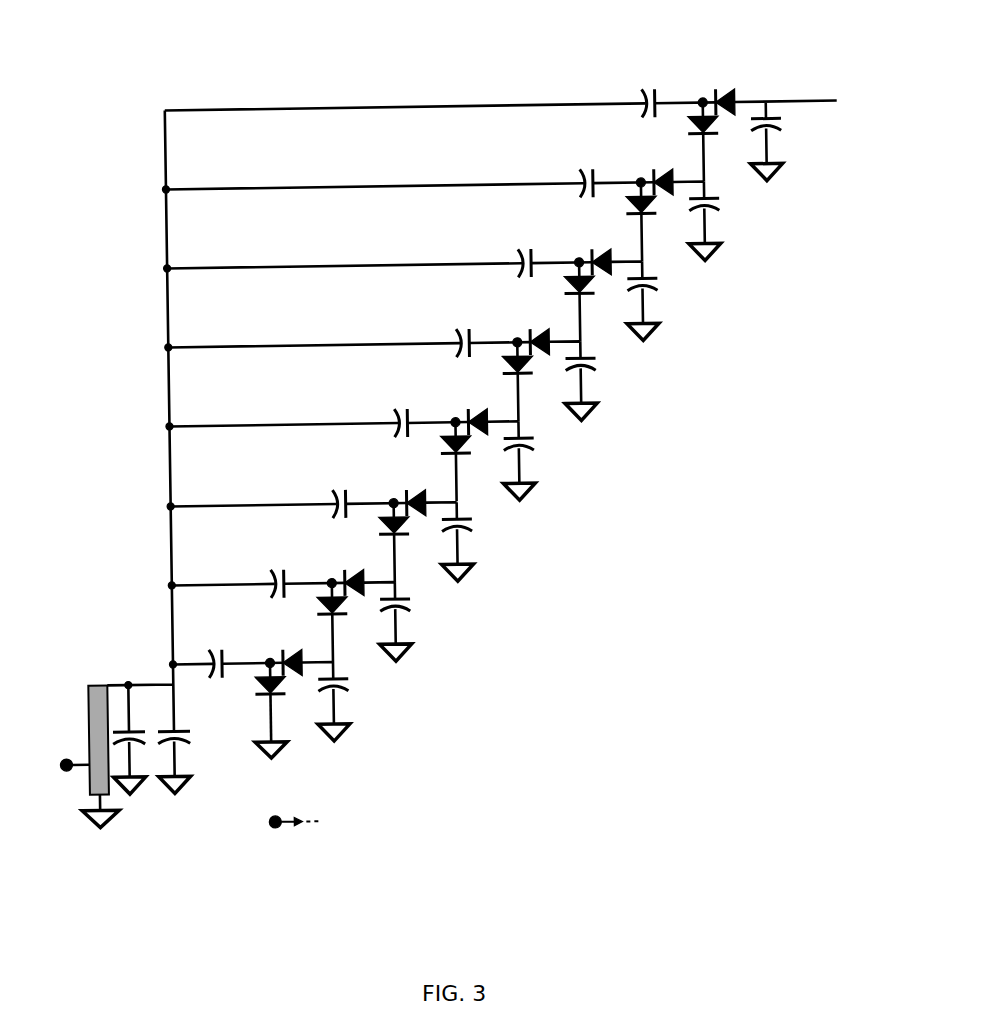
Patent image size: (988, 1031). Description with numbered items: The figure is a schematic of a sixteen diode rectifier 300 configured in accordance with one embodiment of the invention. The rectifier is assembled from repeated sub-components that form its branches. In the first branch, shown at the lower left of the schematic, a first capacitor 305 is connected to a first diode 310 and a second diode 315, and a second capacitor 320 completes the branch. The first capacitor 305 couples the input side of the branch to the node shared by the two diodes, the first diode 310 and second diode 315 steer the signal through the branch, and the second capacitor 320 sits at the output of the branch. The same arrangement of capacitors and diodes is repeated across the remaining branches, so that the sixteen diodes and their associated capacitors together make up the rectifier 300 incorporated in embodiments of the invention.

The sixteen diode rectifier 300 is at (63, 35).
The first capacitor 305 is at (211, 692).
The first diode 310 is at (276, 697).
The second diode 315 is at (291, 678).
The second capacitor 320 is at (347, 692).